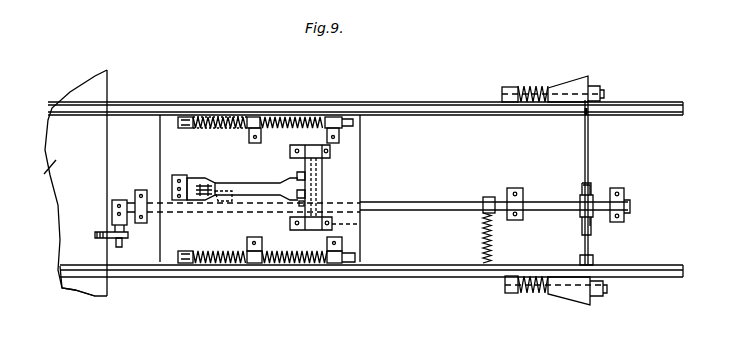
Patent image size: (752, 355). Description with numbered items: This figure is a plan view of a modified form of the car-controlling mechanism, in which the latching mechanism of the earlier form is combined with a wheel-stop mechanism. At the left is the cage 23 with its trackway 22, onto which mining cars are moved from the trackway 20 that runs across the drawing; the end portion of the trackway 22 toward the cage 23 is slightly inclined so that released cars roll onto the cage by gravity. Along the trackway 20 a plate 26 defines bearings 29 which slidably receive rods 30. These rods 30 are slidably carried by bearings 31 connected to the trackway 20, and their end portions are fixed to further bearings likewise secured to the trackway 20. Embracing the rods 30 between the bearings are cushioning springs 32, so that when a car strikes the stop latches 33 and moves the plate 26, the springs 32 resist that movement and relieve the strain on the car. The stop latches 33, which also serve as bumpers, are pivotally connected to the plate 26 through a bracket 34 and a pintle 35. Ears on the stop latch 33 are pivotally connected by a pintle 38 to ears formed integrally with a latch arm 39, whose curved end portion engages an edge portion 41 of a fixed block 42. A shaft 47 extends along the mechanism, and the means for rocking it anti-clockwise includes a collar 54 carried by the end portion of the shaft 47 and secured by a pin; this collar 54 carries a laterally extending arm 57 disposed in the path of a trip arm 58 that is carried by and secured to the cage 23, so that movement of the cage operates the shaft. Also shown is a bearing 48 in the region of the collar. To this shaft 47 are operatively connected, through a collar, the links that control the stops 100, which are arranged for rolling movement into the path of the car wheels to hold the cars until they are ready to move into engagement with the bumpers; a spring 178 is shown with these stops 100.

The trackway 20 is at (415, 101).
The trackway of the cage 22 is at (72, 289).
The cage 23 is at (56, 160).
The plate 26 is at (355, 160).
The bearing 29 is at (333, 268).
The rod 30 is at (222, 266).
The bearing 31 is at (272, 266).
The cushioning spring 32 is at (247, 266).
The stop latch 33 is at (322, 186).
The bracket 34 is at (332, 150).
The pintle 35 is at (360, 220).
The pintle 38 is at (300, 206).
The latch arm 39 is at (260, 183).
The edge portion 41 is at (200, 181).
The fixed block 42 is at (190, 167).
The shaft 47 is at (413, 210).
The bearing 48 is at (144, 192).
The collar 54 is at (122, 200).
The laterally extending arm 57 is at (118, 248).
The trip arm 58 is at (128, 240).
The stop 100 is at (580, 78).
The buffer spring 178 is at (512, 86).